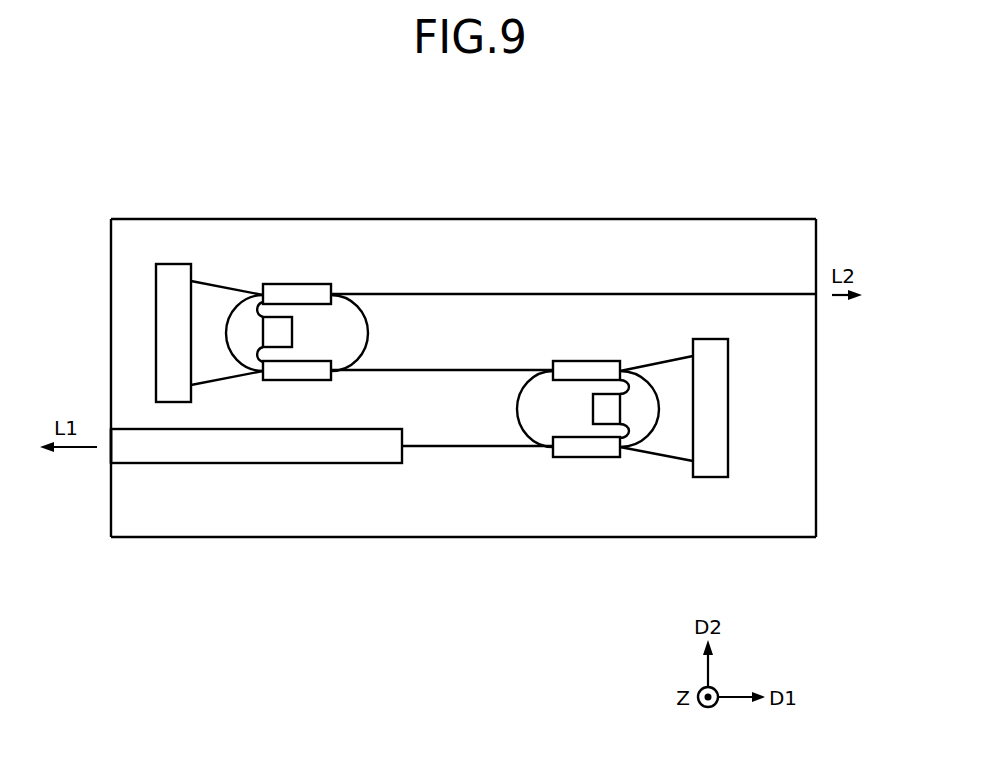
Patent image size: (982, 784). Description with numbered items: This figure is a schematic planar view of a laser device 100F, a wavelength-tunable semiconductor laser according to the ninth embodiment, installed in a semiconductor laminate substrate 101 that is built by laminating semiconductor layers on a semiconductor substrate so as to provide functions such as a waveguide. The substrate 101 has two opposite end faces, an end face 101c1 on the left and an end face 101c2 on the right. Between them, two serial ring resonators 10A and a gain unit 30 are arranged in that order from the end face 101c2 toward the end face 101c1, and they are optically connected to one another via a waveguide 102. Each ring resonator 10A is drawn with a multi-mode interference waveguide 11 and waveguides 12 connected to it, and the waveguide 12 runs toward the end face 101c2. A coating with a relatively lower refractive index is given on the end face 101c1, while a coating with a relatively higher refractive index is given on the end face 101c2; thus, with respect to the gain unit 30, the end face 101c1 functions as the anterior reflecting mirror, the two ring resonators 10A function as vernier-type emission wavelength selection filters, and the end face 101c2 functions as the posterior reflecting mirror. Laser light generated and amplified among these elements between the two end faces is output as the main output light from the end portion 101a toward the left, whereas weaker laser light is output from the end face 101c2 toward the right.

The laser device 100F is at (773, 217).
The semiconductor laminate substrate 101 is at (786, 493).
The end portion 101a is at (110, 447).
The end face 101c1 is at (110, 360).
The end face 101c2 is at (816, 233).
The ring resonator 10A is at (266, 255).
The multi-mode interference waveguide 11 is at (320, 362).
The waveguide 12 is at (395, 292).
The waveguide 102 is at (362, 372).
The gain unit 30 is at (258, 464).